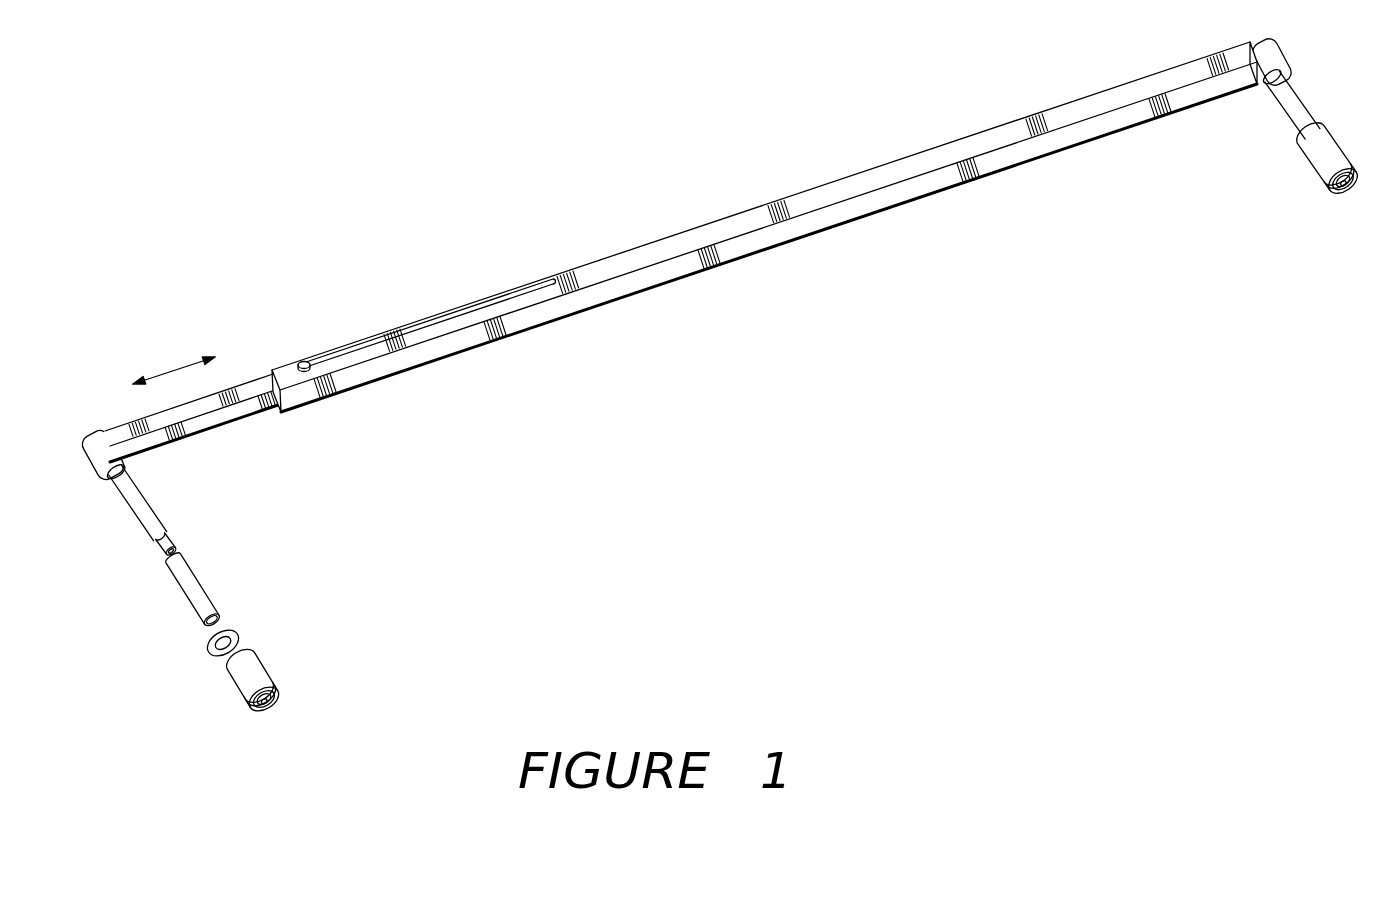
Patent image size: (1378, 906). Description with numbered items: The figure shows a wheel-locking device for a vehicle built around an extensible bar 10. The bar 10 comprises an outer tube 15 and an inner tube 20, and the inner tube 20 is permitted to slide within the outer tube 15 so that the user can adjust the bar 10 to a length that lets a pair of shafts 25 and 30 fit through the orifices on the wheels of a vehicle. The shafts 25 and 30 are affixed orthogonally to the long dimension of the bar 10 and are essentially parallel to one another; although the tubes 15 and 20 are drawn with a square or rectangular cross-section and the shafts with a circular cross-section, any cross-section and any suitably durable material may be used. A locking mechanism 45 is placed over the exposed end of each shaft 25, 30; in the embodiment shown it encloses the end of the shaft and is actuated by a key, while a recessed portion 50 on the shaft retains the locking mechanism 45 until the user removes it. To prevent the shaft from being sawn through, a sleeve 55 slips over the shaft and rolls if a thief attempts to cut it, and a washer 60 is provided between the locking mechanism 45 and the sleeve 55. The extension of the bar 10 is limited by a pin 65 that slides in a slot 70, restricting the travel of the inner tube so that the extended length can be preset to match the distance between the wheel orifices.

The extensible bar 10 is at (783, 224).
The outer tube 15 is at (769, 248).
The inner tube 20 is at (178, 428).
The shaft 25 is at (132, 502).
The shaft 30 is at (1288, 103).
The locking mechanism 45 is at (780, 417).
The recessed portion 50 is at (149, 549).
The sleeve 55 is at (202, 589).
The washer 60 is at (239, 634).
The pin 65 is at (306, 361).
The slot 70 is at (410, 330).